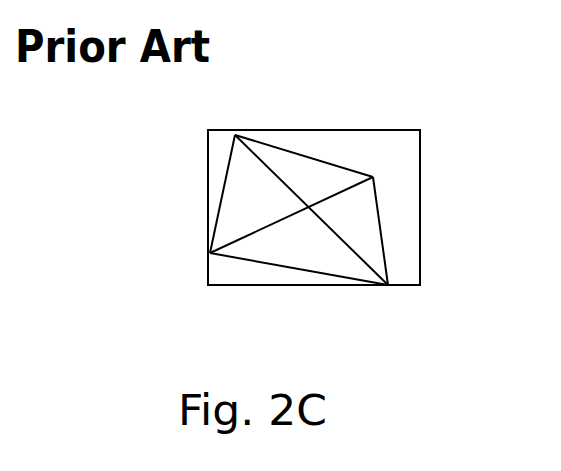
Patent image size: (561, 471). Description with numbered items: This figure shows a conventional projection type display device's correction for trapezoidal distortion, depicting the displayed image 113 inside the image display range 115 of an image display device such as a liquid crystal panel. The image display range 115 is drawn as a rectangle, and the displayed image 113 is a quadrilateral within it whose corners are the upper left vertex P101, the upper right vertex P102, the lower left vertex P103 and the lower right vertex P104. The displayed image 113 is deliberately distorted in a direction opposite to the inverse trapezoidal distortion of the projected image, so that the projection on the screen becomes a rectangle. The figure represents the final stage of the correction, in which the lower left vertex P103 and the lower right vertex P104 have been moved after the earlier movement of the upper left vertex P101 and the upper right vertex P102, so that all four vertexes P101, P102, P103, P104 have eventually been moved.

The image display range 115 is at (370, 130).
The displayed image 113 is at (350, 282).
The upper left vertex P101 is at (235, 135).
The upper right vertex P102 is at (373, 177).
The lower left vertex P103 is at (210, 253).
The lower right vertex P104 is at (388, 285).